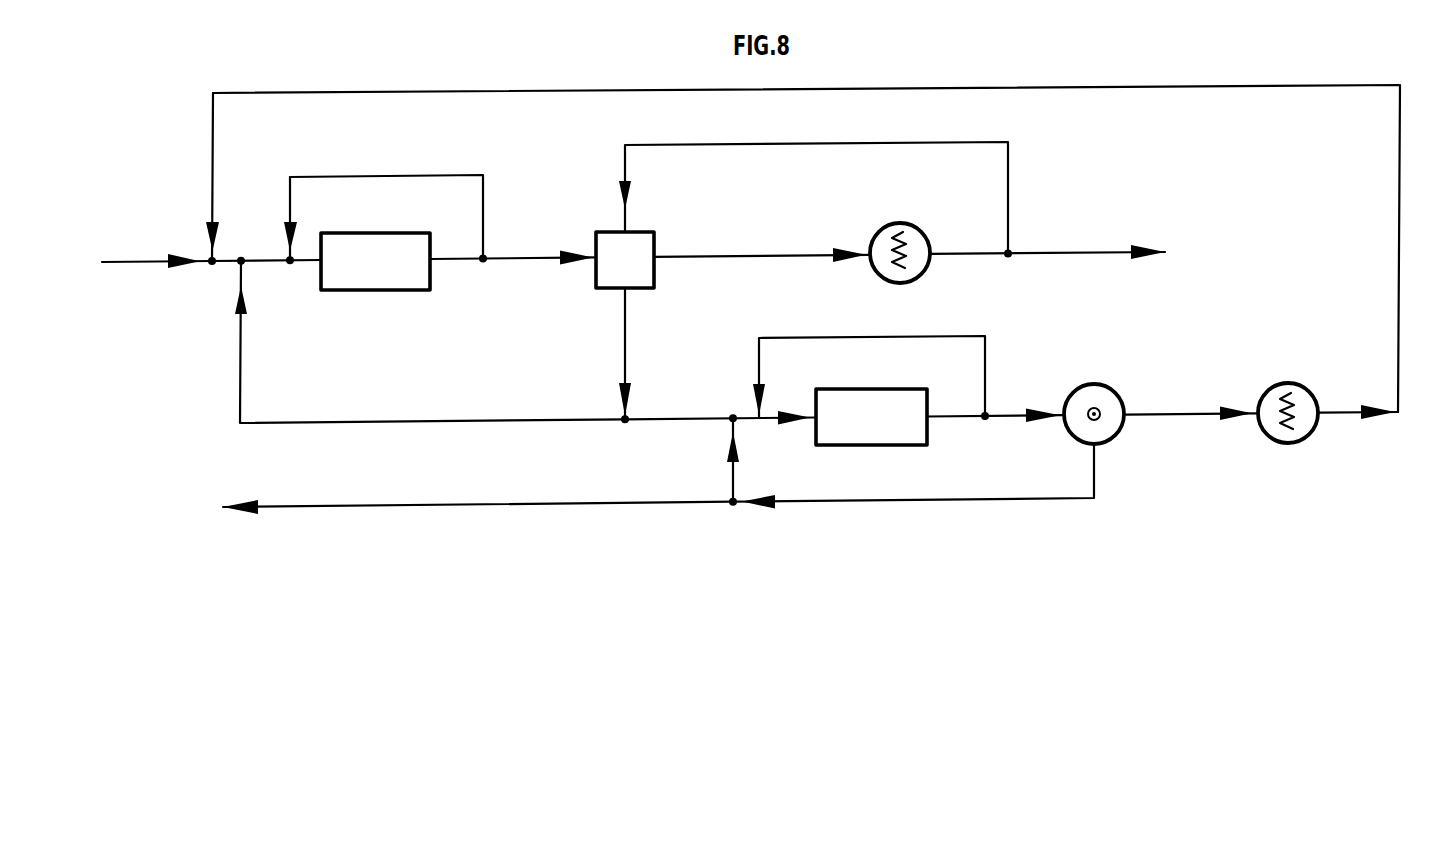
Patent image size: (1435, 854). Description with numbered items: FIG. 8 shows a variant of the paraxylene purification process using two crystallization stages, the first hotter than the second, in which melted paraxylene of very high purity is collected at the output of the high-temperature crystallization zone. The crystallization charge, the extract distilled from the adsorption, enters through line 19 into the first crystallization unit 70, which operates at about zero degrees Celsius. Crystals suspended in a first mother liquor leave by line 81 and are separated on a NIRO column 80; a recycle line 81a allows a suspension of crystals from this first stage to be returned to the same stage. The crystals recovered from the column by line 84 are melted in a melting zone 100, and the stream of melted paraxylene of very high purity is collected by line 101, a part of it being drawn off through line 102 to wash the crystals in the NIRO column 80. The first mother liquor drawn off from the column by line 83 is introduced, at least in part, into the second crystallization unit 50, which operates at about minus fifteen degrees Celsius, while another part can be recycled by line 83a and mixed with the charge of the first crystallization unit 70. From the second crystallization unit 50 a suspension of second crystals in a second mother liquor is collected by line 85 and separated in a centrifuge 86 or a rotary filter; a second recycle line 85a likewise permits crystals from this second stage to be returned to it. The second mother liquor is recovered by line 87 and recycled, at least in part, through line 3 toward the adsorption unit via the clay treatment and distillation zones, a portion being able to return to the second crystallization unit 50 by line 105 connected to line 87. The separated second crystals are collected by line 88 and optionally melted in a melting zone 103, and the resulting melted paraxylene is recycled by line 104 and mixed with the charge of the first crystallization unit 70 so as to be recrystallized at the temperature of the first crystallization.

The mother liquor line 3 is at (457, 502).
The charge line 19 is at (137, 262).
The second crystallization unit 50 is at (885, 432).
The first crystallization unit 70 is at (389, 276).
The NIRO column 80 is at (639, 274).
The line 81 is at (485, 262).
The recycle line 81a is at (483, 175).
The line 83 is at (622, 362).
The line 83a is at (395, 421).
The line 84 is at (722, 256).
The line 85 is at (957, 418).
The recycle line 85a is at (985, 338).
The centrifuge 86 is at (1098, 382).
The line 87 is at (1094, 490).
The line 88 is at (1180, 413).
The melting zone 100 is at (912, 281).
The line 101 is at (1043, 254).
The line 102 is at (1010, 175).
The melting zone 103 is at (1270, 384).
The line 104 is at (213, 178).
The line 105 is at (733, 470).